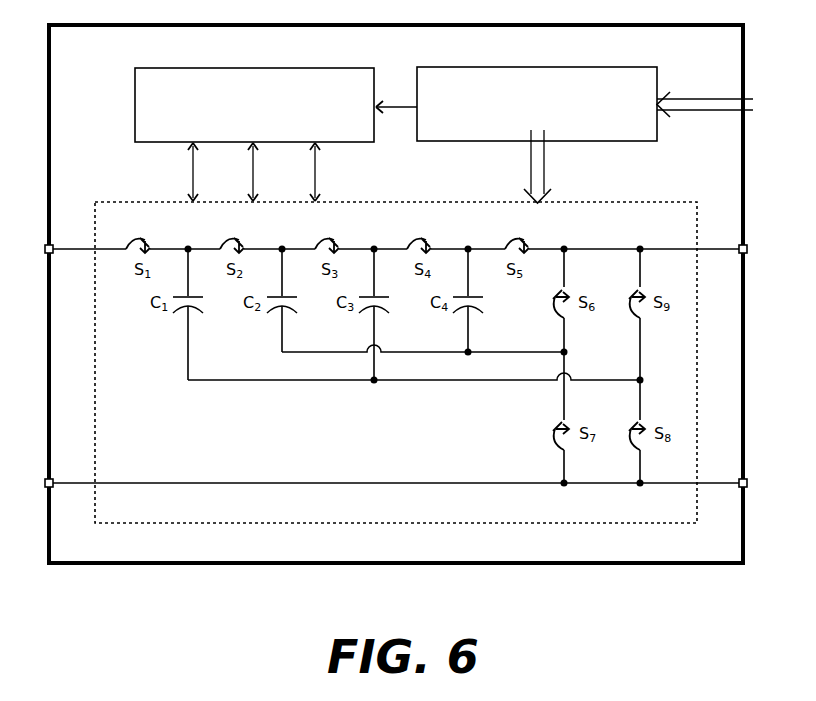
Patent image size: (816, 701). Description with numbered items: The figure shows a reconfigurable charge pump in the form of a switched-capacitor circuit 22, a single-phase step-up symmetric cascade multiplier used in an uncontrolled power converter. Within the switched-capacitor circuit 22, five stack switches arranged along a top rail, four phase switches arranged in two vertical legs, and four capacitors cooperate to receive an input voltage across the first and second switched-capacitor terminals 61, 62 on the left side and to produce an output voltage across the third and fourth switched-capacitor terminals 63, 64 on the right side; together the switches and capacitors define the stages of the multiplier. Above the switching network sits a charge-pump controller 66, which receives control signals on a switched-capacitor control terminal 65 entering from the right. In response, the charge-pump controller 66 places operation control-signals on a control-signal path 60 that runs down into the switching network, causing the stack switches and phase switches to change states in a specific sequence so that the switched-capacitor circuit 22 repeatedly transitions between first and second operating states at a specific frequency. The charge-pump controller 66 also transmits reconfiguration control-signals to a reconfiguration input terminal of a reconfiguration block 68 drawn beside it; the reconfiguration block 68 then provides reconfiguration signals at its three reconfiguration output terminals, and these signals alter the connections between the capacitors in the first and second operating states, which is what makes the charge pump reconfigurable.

The switched-capacitor circuit 22 is at (82, 55).
The reconfiguration block 68 is at (162, 93).
The charge-pump controller 66 is at (444, 93).
The switched-capacitor control terminal 65 is at (718, 104).
The control-signal path 60 is at (550, 170).
The first switched-capacitor terminal 61 is at (71, 249).
The second switched-capacitor terminal 62 is at (208, 483).
The third switched-capacitor terminal 63 is at (710, 249).
The fourth switched-capacitor terminal 64 is at (590, 483).